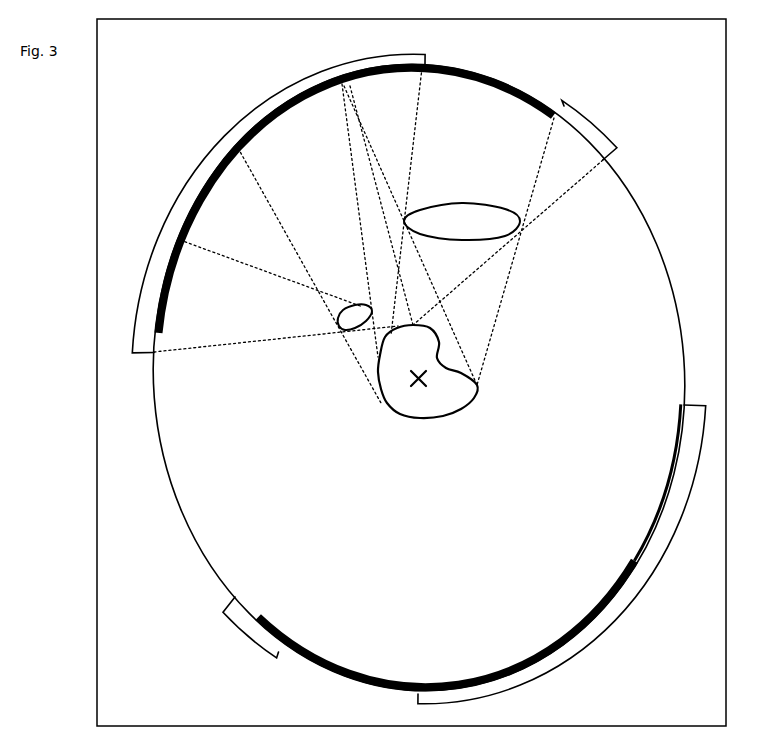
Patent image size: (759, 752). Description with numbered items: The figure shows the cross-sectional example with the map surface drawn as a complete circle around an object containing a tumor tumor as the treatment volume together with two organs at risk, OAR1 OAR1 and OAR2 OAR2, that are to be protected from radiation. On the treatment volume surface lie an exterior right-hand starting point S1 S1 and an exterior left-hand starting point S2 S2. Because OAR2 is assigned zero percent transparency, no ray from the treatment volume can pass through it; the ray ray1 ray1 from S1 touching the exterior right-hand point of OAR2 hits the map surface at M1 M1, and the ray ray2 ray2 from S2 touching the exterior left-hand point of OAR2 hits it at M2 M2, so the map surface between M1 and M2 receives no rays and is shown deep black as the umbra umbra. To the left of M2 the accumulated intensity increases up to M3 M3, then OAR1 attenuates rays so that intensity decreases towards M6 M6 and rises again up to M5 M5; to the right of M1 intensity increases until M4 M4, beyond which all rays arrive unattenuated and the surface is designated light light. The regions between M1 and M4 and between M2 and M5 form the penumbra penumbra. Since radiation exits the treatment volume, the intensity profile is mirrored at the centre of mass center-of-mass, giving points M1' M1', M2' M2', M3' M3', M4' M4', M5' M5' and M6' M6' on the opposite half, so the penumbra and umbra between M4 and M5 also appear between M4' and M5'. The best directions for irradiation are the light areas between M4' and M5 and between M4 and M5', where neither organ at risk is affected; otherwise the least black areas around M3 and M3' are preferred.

The light area light is at (654, 233).
The element umbra is at (482, 78).
The element penumbra is at (227, 133).
The map surface point M1 is at (562, 135).
The map surface point M2 is at (437, 91).
The map surface point M3 is at (356, 102).
The map surface point M4 is at (603, 176).
The map surface point M5 is at (169, 370).
The map surface point M6 is at (220, 212).
The mirrored map surface point M1' is at (290, 624).
The mirrored map surface point M2' is at (423, 668).
The mirrored map surface point M3' is at (506, 657).
The mirrored map surface point M4' is at (242, 584).
The mirrored map surface point M5' is at (665, 407).
The mirrored map surface point M6' is at (624, 548).
The ray from S1 ray1 is at (520, 248).
The ray from S2 ray2 is at (416, 147).
The tumour tumor is at (476, 400).
The exterior right-hand starting point S1 is at (484, 388).
The exterior left-hand starting point S2 is at (374, 363).
The centre of mass center-of-mass is at (422, 383).
The organ at risk OAR1 is at (340, 323).
The organ at risk OAR2 is at (463, 204).